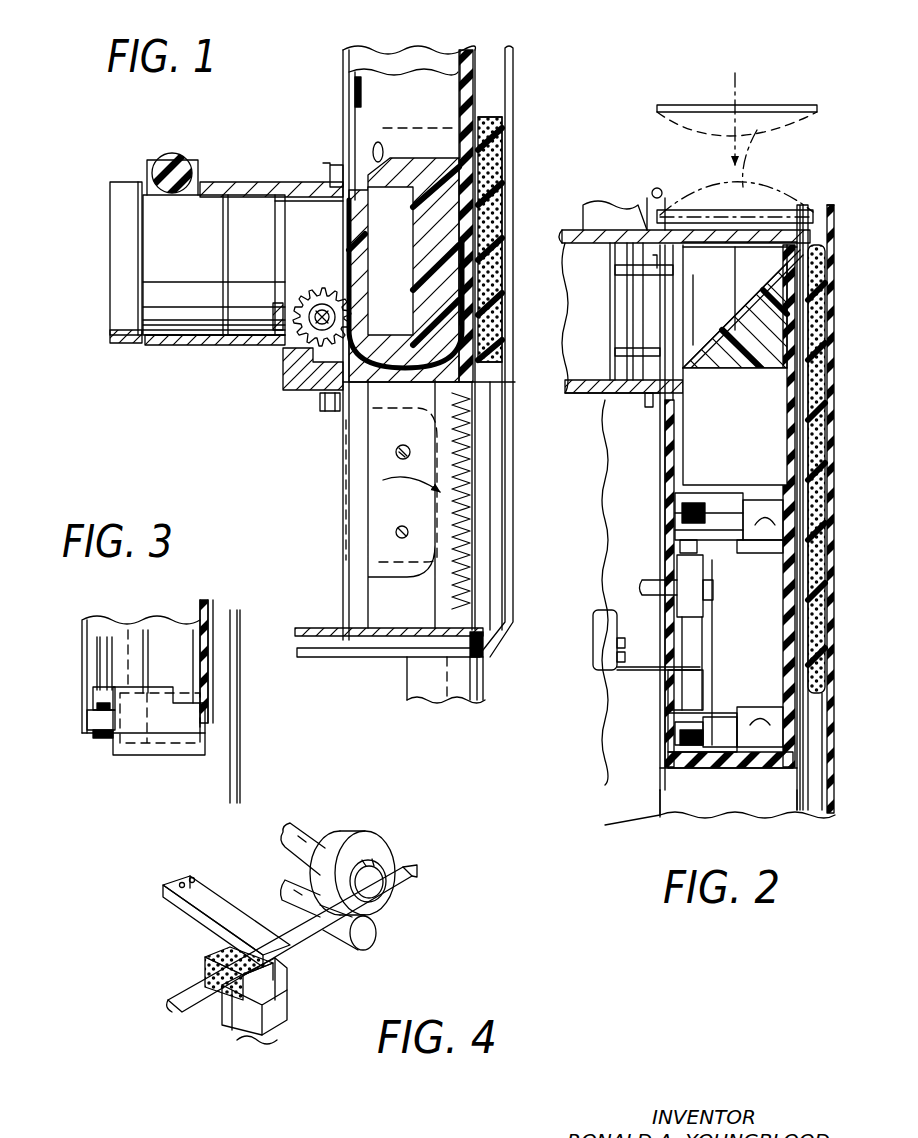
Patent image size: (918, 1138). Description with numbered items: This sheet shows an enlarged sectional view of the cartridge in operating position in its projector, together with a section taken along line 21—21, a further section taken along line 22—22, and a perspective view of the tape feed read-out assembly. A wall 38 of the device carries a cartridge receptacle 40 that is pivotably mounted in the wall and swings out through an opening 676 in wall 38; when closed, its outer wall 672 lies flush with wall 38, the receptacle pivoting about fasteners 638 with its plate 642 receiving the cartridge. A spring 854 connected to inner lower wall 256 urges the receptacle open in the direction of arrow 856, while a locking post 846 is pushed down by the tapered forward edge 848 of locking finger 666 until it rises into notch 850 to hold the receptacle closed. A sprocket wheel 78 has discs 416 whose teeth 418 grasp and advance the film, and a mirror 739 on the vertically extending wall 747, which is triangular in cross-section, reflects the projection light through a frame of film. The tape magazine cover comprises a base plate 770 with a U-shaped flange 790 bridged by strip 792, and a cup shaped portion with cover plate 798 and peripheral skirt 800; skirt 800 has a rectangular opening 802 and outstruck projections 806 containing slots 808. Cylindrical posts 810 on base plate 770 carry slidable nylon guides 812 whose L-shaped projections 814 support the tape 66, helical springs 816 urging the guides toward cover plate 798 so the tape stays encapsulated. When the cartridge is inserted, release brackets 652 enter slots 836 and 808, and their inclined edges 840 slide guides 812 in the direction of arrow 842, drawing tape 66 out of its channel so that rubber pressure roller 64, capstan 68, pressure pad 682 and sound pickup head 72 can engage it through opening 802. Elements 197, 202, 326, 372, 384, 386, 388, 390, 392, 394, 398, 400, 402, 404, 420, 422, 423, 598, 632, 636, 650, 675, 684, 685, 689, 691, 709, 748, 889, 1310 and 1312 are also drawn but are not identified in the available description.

In FIG. 1, the section line 21 is at (258, 296).
In FIG. 2, the section line 22 is at (625, 500).
In FIG. 1, the wall 38 is at (507, 606).
In FIG. 1, the cartridge receptacle 40 is at (517, 115).
In FIG. 2, the pressure roller 64 is at (640, 570).
In FIG. 4, the pressure roller 64 is at (385, 853).
In FIG. 2, the sound recording tape 66 is at (690, 640).
In FIG. 3, the sound recording tape 66 is at (100, 623).
In FIG. 4, the sound recording tape 66 is at (403, 880).
In FIG. 4, the capstan 68 is at (367, 937).
In FIG. 4, the sound pickup head 72 is at (220, 1007).
In FIG. 1, the sprocket wheel 78 is at (308, 294).
In FIG. 2, the sprocket wheel 78 is at (640, 297).
In FIG. 1, the lower bracket 197 is at (471, 723).
In FIG. 1, the frame member 202 is at (110, 248).
In FIG. 1, the inner lower wall 256 is at (327, 592).
In FIG. 1, the cover wall 326 is at (343, 115).
In FIG. 4, the shaft 372 is at (370, 862).
In FIG. 1, the threaded sleeve 384 is at (173, 340).
In FIG. 1, the top bar 386 is at (200, 188).
In FIG. 1, the block 388 is at (190, 200).
In FIG. 1, the bracket 390 is at (300, 372).
In FIG. 2, the bracket 390 is at (603, 235).
In FIG. 1, the screw 392 is at (330, 408).
In FIG. 1, the clip 394 is at (335, 167).
In FIG. 1, the pin 398 is at (170, 165).
In FIG. 1, the sleeve 400 is at (160, 310).
In FIG. 1, the end member 402 is at (118, 190).
In FIG. 1, the pin seat 404 is at (188, 166).
In FIG. 1, the discs 416 is at (283, 298).
In FIG. 2, the discs 416 is at (630, 232).
In FIG. 1, the teeth 418 is at (342, 292).
In FIG. 2, the teeth 418 is at (640, 305).
In FIG. 1, the cross-section wall 420 is at (388, 284).
In FIG. 2, the cross-section wall 420 is at (645, 318).
In FIG. 1, the gear 422 is at (315, 325).
In FIG. 2, the gear 422 is at (660, 190).
In FIG. 1, the shoulder 423 is at (273, 343).
In FIG. 2, the dome 598 is at (755, 177).
In FIG. 1, the housing body 632 is at (383, 606).
In FIG. 1, the housing wall 636 is at (357, 468).
In FIG. 1, the fasteners 638 is at (398, 533).
In FIG. 1, the plate 642 is at (437, 548).
In FIG. 4, the lower block 650 is at (273, 1018).
In FIG. 2, the release brackets 652 is at (768, 540).
In FIG. 3, the release brackets 652 is at (133, 755).
In FIG. 1, the locking finger 666 is at (372, 130).
In FIG. 1, the outer wall 672 is at (503, 473).
In FIG. 1, the insulation 675 is at (493, 170).
In FIG. 2, the insulation 675 is at (812, 418).
In FIG. 1, the opening 676 is at (503, 68).
In FIG. 2, the pressure pad 682 is at (685, 705).
In FIG. 4, the pressure pad 682 is at (210, 965).
In FIG. 2, the plate 684 is at (645, 670).
In FIG. 4, the plate 684 is at (233, 903).
In FIG. 2, the bracket 685 is at (598, 655).
In FIG. 4, the bracket 685 is at (193, 877).
In FIG. 4, the hole 689 is at (182, 880).
In FIG. 4, the slot 691 is at (270, 960).
In FIG. 2, the stop 709 is at (752, 500).
In FIG. 1, the mirror 739 is at (407, 210).
In FIG. 2, the mirror 739 is at (733, 298).
In FIG. 2, the vertically extending wall 747 is at (735, 362).
In FIG. 1, the wall 748 is at (388, 249).
In FIG. 2, the wall 748 is at (693, 300).
In FIG. 2, the base plate 770 is at (675, 748).
In FIG. 3, the base plate 770 is at (87, 717).
In FIG. 2, the flange 790 is at (733, 580).
In FIG. 2, the strip 792 is at (730, 610).
In FIG. 2, the cover plate 798 is at (735, 665).
In FIG. 3, the cover plate 798 is at (163, 650).
In FIG. 2, the peripheral skirt 800 is at (700, 495).
In FIG. 2, the rectangular opening 802 is at (732, 632).
In FIG. 3, the outstruck projections 806 is at (98, 737).
In FIG. 3, the slots 808 is at (117, 752).
In FIG. 2, the cylindrical posts 810 is at (728, 768).
In FIG. 3, the cylindrical posts 810 is at (183, 753).
In FIG. 2, the nylon guides 812 is at (687, 508).
In FIG. 3, the nylon guides 812 is at (100, 673).
In FIG. 3, the projection 814 is at (93, 727).
In FIG. 3, the helical springs 816 is at (95, 695).
In FIG. 3, the slots 836 is at (187, 690).
In FIG. 3, the inclined edges 840 is at (143, 687).
In FIG. 3, the arrow 842 is at (123, 683).
In FIG. 1, the locking post 846 is at (381, 158).
In FIG. 1, the tapered forward edge 848 is at (353, 108).
In FIG. 1, the notch 850 is at (381, 150).
In FIG. 1, the spring 854 is at (463, 603).
In FIG. 1, the arrow 856 is at (397, 447).
In FIG. 1, the plate 889 is at (470, 640).
In FIG. 2, the lens 1310 is at (737, 90).
In FIG. 2, the wall 1312 is at (755, 265).